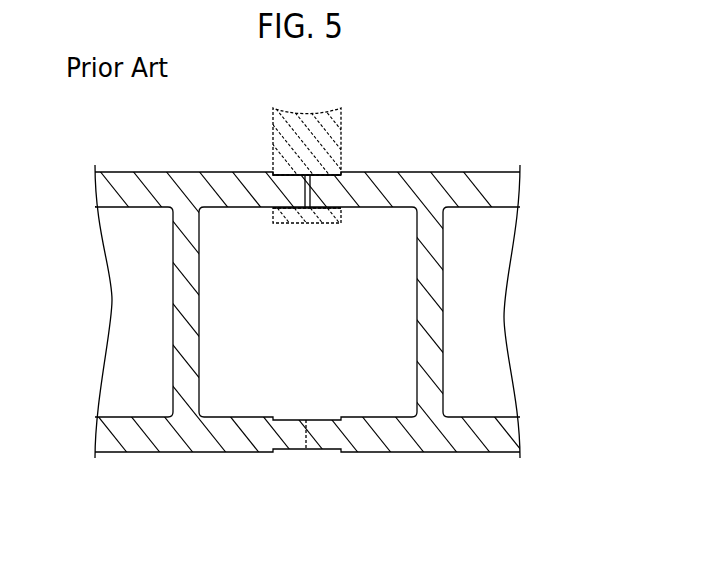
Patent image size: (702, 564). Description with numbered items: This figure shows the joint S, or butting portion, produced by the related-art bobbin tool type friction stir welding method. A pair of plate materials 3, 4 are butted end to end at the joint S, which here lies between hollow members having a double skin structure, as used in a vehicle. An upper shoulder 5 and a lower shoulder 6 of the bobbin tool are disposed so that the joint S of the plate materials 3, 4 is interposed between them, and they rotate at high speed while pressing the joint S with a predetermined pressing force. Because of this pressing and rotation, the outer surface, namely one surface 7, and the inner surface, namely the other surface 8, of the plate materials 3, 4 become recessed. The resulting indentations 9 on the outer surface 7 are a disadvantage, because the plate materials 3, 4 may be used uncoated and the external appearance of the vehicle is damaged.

The plate material 3 is at (193, 171).
The plate material 4 is at (436, 171).
The upper shoulder 5 is at (343, 119).
The lower shoulder 6 is at (311, 224).
The one surface 7 is at (220, 172).
The other surface 8 is at (363, 208).
The indentation 9 is at (336, 171).
The joint S is at (268, 213).